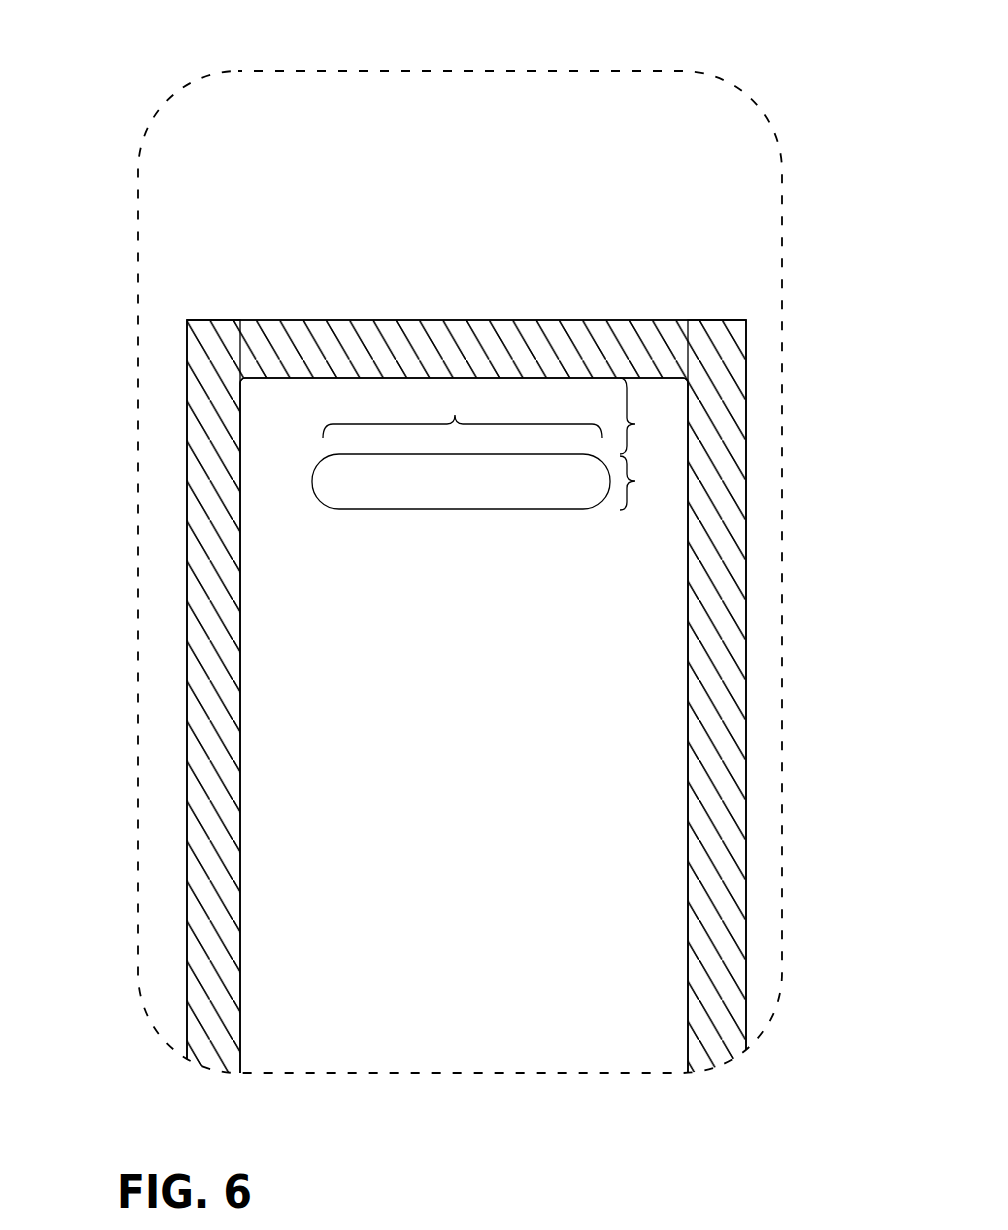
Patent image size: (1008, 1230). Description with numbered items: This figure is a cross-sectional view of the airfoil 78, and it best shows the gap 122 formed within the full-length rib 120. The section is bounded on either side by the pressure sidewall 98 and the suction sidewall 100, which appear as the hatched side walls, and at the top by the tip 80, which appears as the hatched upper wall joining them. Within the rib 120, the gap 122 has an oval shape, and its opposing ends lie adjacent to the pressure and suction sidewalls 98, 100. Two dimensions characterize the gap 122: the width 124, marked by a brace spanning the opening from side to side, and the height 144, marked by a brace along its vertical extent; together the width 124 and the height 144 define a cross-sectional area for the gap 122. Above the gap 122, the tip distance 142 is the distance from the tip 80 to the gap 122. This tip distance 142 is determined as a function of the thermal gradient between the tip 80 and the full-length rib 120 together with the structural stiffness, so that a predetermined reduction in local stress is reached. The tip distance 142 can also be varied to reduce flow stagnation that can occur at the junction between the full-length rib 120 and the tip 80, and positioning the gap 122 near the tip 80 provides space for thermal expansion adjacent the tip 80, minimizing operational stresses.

The airfoil 78 is at (230, 296).
The tip 80 is at (461, 320).
The pressure sidewall 98 is at (187, 607).
The suction sidewall 100 is at (746, 650).
The full-length rib 120 is at (443, 709).
The gap 122 is at (503, 510).
The width 124 is at (462, 411).
The tip distance 142 is at (655, 416).
The height 144 is at (655, 483).